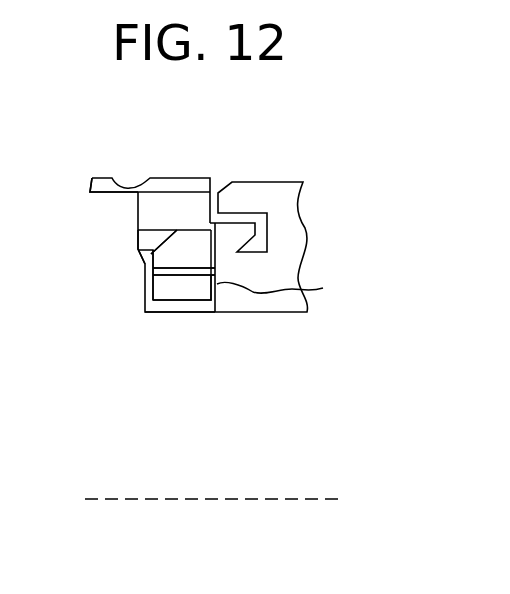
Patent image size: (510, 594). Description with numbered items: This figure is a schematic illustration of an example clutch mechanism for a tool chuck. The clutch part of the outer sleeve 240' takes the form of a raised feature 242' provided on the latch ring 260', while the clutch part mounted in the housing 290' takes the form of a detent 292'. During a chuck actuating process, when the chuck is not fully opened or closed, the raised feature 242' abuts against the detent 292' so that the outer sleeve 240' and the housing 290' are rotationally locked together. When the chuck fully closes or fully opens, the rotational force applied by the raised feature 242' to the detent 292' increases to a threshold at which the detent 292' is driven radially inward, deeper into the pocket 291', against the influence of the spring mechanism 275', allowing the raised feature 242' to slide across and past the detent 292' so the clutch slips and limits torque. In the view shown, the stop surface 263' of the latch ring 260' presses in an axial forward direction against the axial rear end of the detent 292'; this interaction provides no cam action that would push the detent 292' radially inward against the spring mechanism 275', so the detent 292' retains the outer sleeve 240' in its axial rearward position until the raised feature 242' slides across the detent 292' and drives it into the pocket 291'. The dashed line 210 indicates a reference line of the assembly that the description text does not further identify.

The outer sleeve 240' is at (155, 204).
The housing 290' is at (253, 224).
The latch ring 260' is at (82, 203).
The raised feature 242' is at (86, 259).
The detent 292' is at (115, 275).
The spring mechanism 275' is at (156, 315).
The stop surface 263' is at (192, 305).
The pocket 291' is at (292, 288).
The reference plane 210 is at (313, 498).